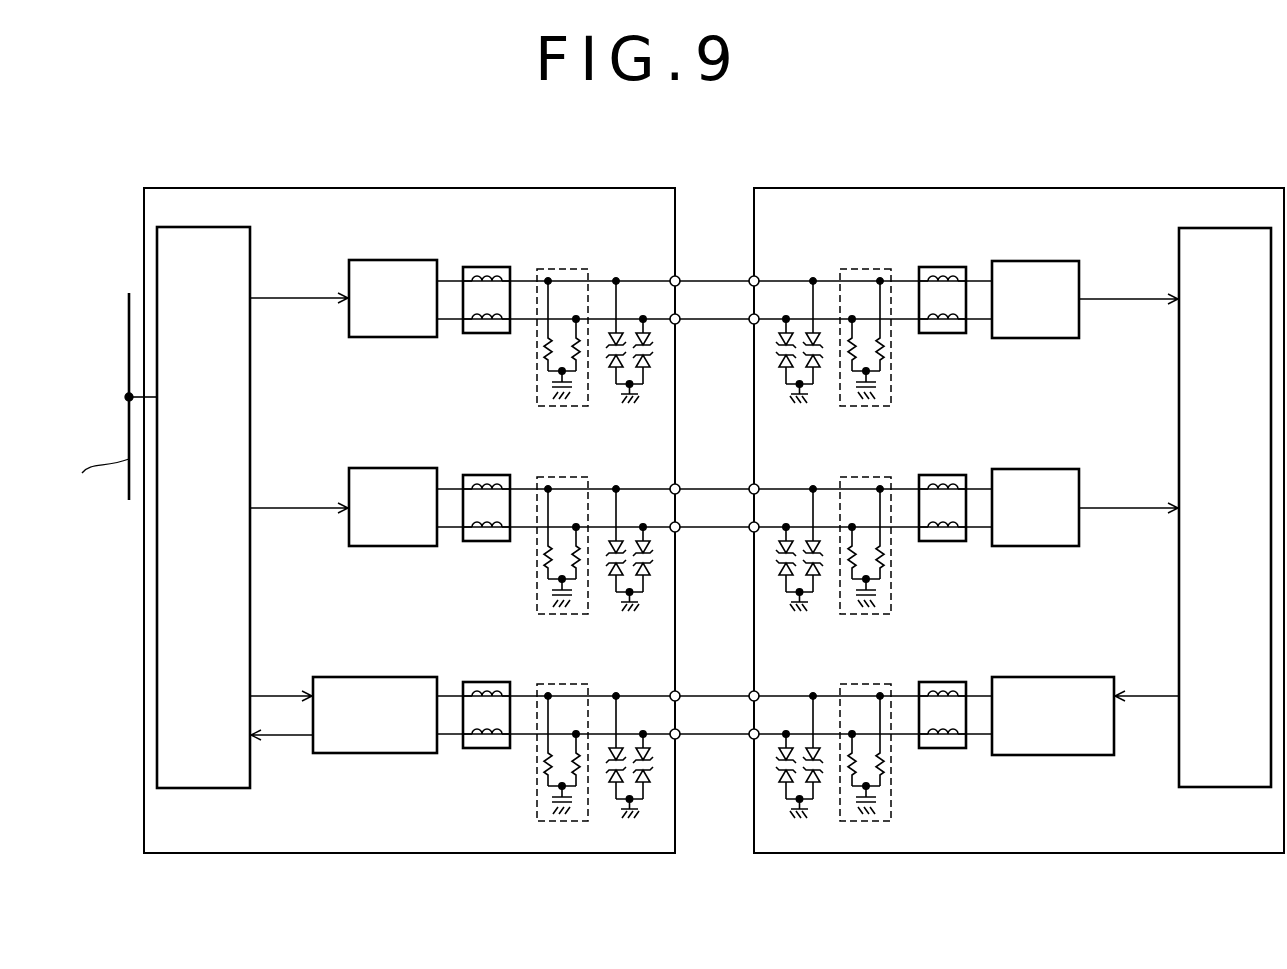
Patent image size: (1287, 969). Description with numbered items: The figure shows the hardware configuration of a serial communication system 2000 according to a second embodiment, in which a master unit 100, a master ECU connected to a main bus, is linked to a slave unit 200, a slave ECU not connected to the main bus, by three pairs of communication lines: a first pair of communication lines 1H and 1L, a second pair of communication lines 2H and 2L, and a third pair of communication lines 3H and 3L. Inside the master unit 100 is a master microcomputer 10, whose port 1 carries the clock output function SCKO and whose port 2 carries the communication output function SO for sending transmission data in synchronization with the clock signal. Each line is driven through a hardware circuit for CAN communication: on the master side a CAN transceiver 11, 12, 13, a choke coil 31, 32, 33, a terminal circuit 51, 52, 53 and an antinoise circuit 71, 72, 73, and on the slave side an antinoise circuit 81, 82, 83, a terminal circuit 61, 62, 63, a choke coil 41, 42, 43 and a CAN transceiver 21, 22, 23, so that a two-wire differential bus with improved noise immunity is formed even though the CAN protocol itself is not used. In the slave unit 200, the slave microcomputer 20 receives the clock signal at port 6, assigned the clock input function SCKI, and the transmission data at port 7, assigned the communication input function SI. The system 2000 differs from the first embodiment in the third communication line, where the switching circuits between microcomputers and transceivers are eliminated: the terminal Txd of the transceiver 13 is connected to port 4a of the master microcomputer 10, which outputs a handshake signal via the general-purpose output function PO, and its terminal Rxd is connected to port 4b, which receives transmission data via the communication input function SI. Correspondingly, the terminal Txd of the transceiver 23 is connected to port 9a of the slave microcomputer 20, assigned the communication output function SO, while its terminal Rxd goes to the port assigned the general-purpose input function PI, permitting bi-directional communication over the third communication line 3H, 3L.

The serial communication system 2000 is at (148, 158).
The master unit 100 is at (408, 188).
The slave unit 200 is at (1013, 188).
The master microcomputer 10 is at (201, 227).
The slave microcomputer 20 is at (1224, 228).
The port 1 is at (252, 298).
The port 2 is at (252, 508).
The port 4a is at (252, 696).
The port 4b is at (252, 735).
The port 6 is at (1178, 299).
The port 7 is at (1178, 508).
The port 9a is at (746, 522).
The CAN transceiver 11 is at (390, 260).
The CAN transceiver 12 is at (390, 468).
The CAN transceiver 13 is at (377, 675).
The CAN transceiver 21 is at (1033, 261).
The CAN transceiver 22 is at (1033, 468).
The CAN transceiver 23 is at (1051, 677).
The choke coil 31 is at (486, 267).
The choke coil 32 is at (486, 474).
The choke coil 33 is at (486, 682).
The choke coil 41 is at (944, 332).
The choke coil 42 is at (944, 540).
The choke coil 43 is at (944, 755).
The terminal circuit 51 is at (548, 269).
The terminal circuit 52 is at (548, 477).
The terminal circuit 53 is at (548, 684).
The terminal circuit 61 is at (862, 269).
The terminal circuit 62 is at (862, 477).
The terminal circuit 63 is at (852, 684).
The antinoise circuit 71 is at (663, 380).
The antinoise circuit 72 is at (663, 588).
The antinoise circuit 73 is at (663, 795).
The antinoise circuit 81 is at (776, 380).
The antinoise circuit 82 is at (776, 588).
The antinoise circuit 83 is at (776, 795).
The communication line 1H is at (720, 281).
The communication line 1L is at (718, 320).
The communication line 2H is at (720, 489).
The communication line 2L is at (718, 528).
The communication line 3H is at (720, 696).
The communication line 3L is at (718, 735).